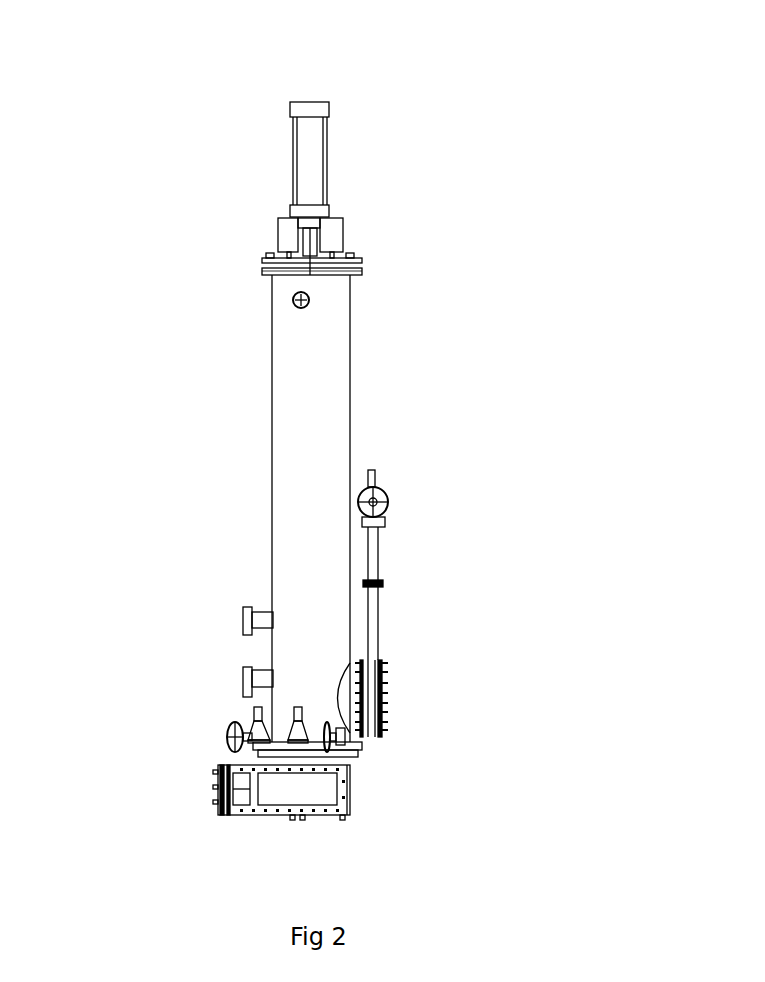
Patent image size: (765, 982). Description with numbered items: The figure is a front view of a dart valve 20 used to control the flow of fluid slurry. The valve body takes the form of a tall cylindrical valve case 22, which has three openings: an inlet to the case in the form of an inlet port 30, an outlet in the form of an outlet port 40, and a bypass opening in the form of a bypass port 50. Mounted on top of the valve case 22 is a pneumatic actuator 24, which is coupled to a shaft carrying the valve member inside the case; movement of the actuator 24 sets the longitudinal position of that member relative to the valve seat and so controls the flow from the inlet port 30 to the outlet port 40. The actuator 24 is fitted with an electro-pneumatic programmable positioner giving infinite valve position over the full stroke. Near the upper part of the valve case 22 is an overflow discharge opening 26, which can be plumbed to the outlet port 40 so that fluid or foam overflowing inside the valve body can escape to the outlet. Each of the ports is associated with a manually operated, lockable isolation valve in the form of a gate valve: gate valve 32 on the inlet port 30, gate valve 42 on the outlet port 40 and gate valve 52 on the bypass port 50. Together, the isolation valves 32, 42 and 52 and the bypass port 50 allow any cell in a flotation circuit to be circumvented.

The dart valve 20 is at (487, 73).
The cylindrical valve case 22 is at (273, 370).
The pneumatic actuator 24 is at (292, 123).
The overflow discharge opening 26 is at (310, 297).
The inlet port 30 is at (385, 692).
The gate valve 32 is at (380, 540).
The outlet port 40 is at (352, 810).
The gate valve 42 is at (330, 732).
The bypass port 50 is at (217, 780).
The gate valve 52 is at (230, 724).